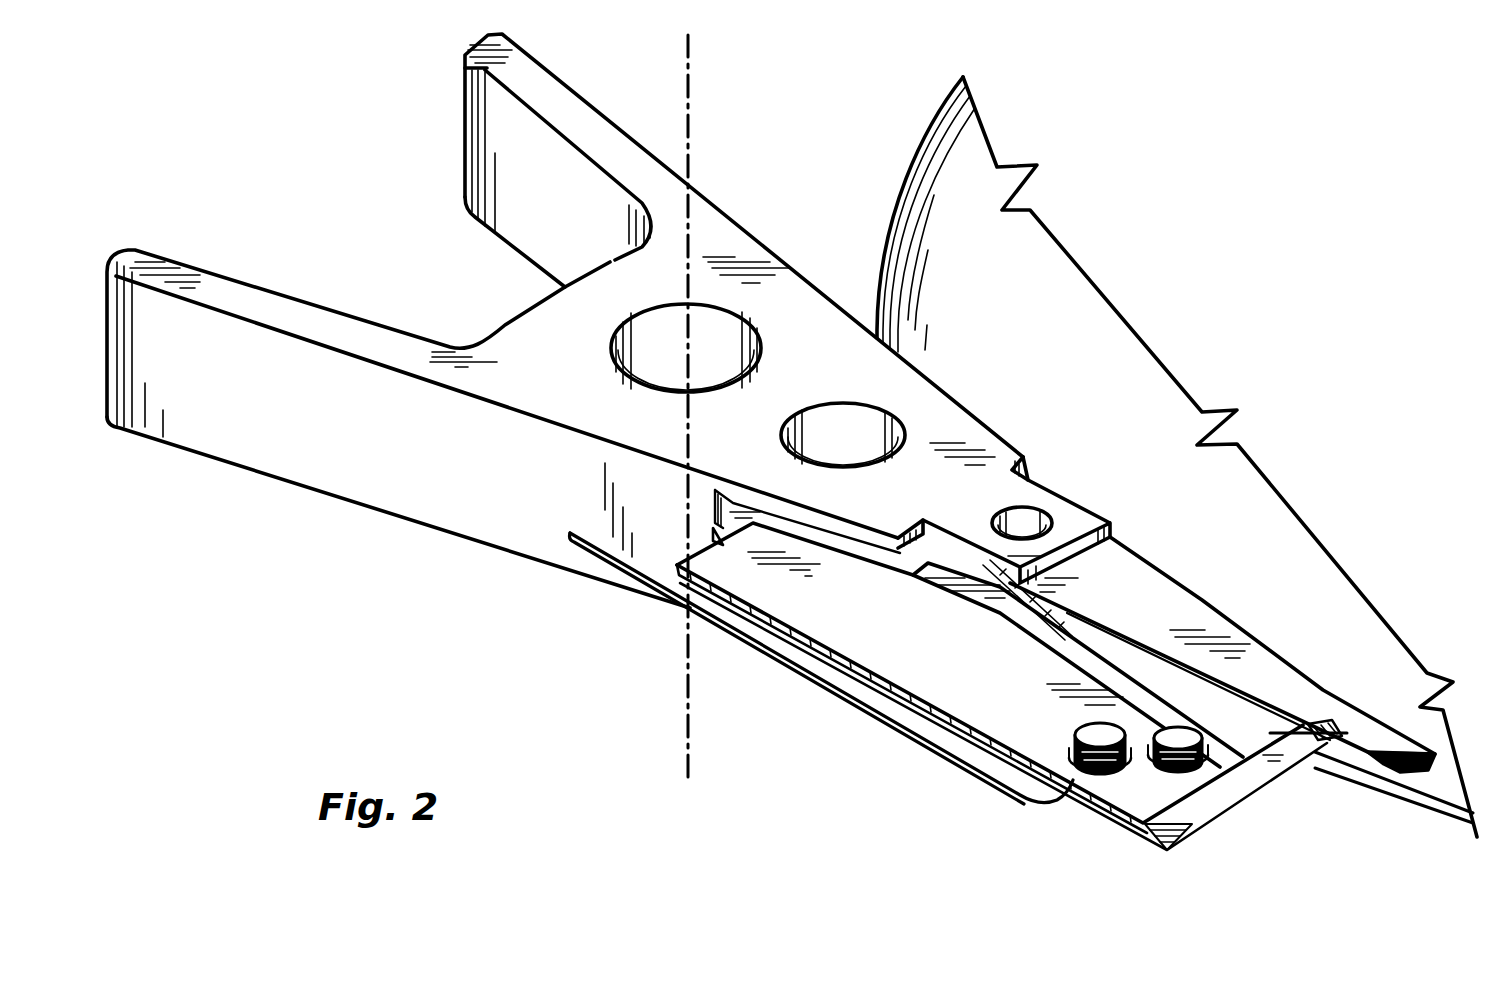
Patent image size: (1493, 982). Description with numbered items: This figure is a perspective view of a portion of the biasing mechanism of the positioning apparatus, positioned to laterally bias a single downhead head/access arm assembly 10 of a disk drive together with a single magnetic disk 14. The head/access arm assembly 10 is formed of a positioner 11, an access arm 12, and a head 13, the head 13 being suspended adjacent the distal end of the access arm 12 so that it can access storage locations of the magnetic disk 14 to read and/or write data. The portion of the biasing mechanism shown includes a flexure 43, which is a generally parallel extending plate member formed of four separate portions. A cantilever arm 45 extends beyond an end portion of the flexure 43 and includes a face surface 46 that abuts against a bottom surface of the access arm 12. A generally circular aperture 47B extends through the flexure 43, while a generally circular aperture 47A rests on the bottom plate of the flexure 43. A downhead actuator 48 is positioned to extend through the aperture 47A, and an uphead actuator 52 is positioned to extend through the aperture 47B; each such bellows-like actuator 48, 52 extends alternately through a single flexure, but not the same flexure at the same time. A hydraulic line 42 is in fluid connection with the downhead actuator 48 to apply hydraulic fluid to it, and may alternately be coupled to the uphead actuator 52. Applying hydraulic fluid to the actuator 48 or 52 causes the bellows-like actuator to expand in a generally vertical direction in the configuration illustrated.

The head/access arm assembly 10 is at (438, 149).
The positioner 11 is at (197, 277).
The access arm 12 is at (1275, 646).
The head 13 is at (1380, 755).
The magnetic disk 14 is at (1062, 315).
The hydraulic line 42 is at (742, 640).
The flexure 43 is at (867, 643).
The cantilever arm 45 is at (1173, 840).
The face surface 46 is at (1320, 727).
The aperture 47A is at (1097, 780).
The aperture 47B is at (1198, 767).
The downhead actuator 48 is at (968, 768).
The uphead actuator 52 is at (1177, 737).